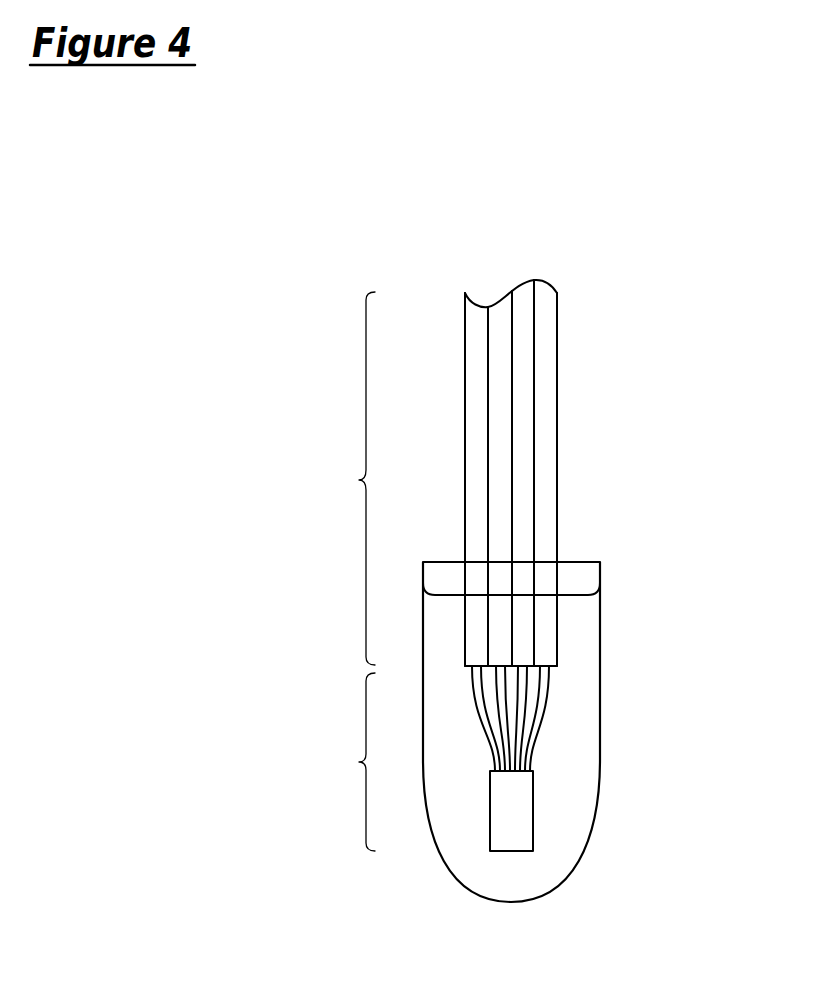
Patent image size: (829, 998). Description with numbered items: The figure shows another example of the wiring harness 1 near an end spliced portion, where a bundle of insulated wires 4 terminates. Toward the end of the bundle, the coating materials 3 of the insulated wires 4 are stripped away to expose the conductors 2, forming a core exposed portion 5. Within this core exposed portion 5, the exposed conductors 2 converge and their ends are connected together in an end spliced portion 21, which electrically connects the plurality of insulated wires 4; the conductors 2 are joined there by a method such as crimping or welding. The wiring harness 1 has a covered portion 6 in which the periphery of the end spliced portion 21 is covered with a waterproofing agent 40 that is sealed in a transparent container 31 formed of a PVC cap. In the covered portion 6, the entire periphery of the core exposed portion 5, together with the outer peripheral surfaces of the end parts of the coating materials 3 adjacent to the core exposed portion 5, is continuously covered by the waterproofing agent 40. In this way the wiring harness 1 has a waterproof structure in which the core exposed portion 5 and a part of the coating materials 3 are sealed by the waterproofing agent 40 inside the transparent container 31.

The wiring harness 1 is at (565, 628).
The conductors 2 is at (503, 700).
The coating materials 3 is at (359, 479).
The insulated wires 4 is at (522, 375).
The core exposed portion 5 is at (359, 762).
The covered portion 6 is at (558, 646).
The end spliced portion 21 is at (522, 825).
The transparent container 31 is at (592, 827).
The waterproofing agent 40 is at (567, 740).